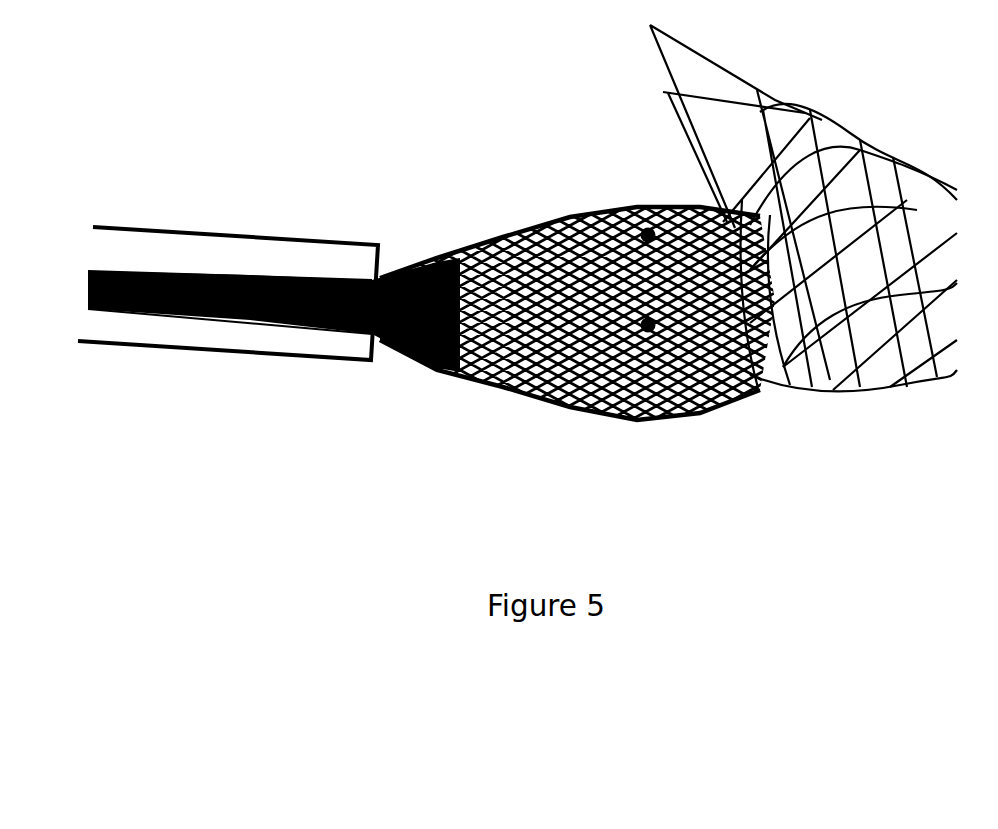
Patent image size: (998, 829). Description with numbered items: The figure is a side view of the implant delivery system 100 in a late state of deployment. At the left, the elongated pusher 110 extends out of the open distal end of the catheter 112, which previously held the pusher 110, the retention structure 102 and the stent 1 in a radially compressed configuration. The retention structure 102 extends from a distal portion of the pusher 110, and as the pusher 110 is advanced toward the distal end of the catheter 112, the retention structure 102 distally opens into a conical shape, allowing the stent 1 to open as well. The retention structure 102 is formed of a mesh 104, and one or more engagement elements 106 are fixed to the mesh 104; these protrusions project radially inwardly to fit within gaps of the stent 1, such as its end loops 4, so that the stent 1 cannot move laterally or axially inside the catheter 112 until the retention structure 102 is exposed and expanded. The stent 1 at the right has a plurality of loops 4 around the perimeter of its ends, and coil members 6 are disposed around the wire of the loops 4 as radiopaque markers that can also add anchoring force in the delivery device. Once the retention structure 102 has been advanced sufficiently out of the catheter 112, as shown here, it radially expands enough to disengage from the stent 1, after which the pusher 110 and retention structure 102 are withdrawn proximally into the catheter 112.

The stent 1 is at (904, 410).
The loops 4 is at (733, 65).
The coil members 6 is at (672, 120).
The implant delivery system 100 is at (368, 414).
The retention structure 102 is at (581, 432).
The mesh 104 is at (498, 390).
The engagement elements 106 is at (646, 230).
The pusher 110 is at (240, 276).
The catheter 112 is at (195, 345).